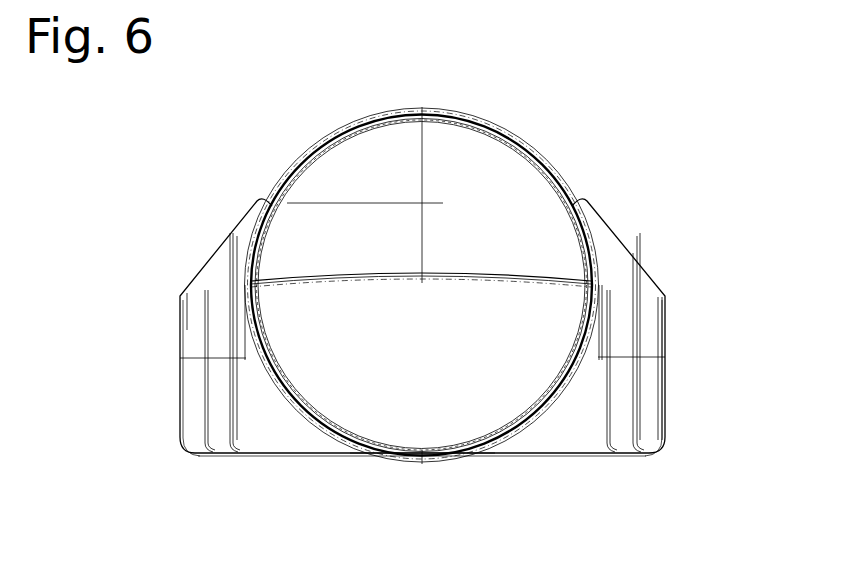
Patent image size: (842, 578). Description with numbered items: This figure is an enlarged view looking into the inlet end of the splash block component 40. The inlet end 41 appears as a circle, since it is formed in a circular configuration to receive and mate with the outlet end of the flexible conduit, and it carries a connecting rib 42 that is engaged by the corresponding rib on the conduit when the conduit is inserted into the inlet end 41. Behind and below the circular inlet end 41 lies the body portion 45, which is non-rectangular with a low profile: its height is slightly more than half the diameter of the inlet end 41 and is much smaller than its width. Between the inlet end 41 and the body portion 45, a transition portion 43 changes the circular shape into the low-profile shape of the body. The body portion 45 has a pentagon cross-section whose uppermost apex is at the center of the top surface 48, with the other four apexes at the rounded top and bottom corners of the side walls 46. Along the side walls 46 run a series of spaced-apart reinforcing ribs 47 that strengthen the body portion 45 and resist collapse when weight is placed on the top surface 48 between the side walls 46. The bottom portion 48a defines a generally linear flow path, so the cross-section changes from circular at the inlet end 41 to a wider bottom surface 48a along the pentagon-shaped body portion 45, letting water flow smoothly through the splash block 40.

The splash block component 40 is at (543, 93).
The inlet end 41 is at (558, 178).
The connecting rib 42 is at (297, 162).
The transition portion 43 is at (533, 435).
The body portion 45 is at (668, 372).
The side walls 46 is at (193, 351).
The reinforcing ribs 47 is at (205, 408).
The top surface 48 is at (363, 278).
The bottom portion 48a is at (345, 455).